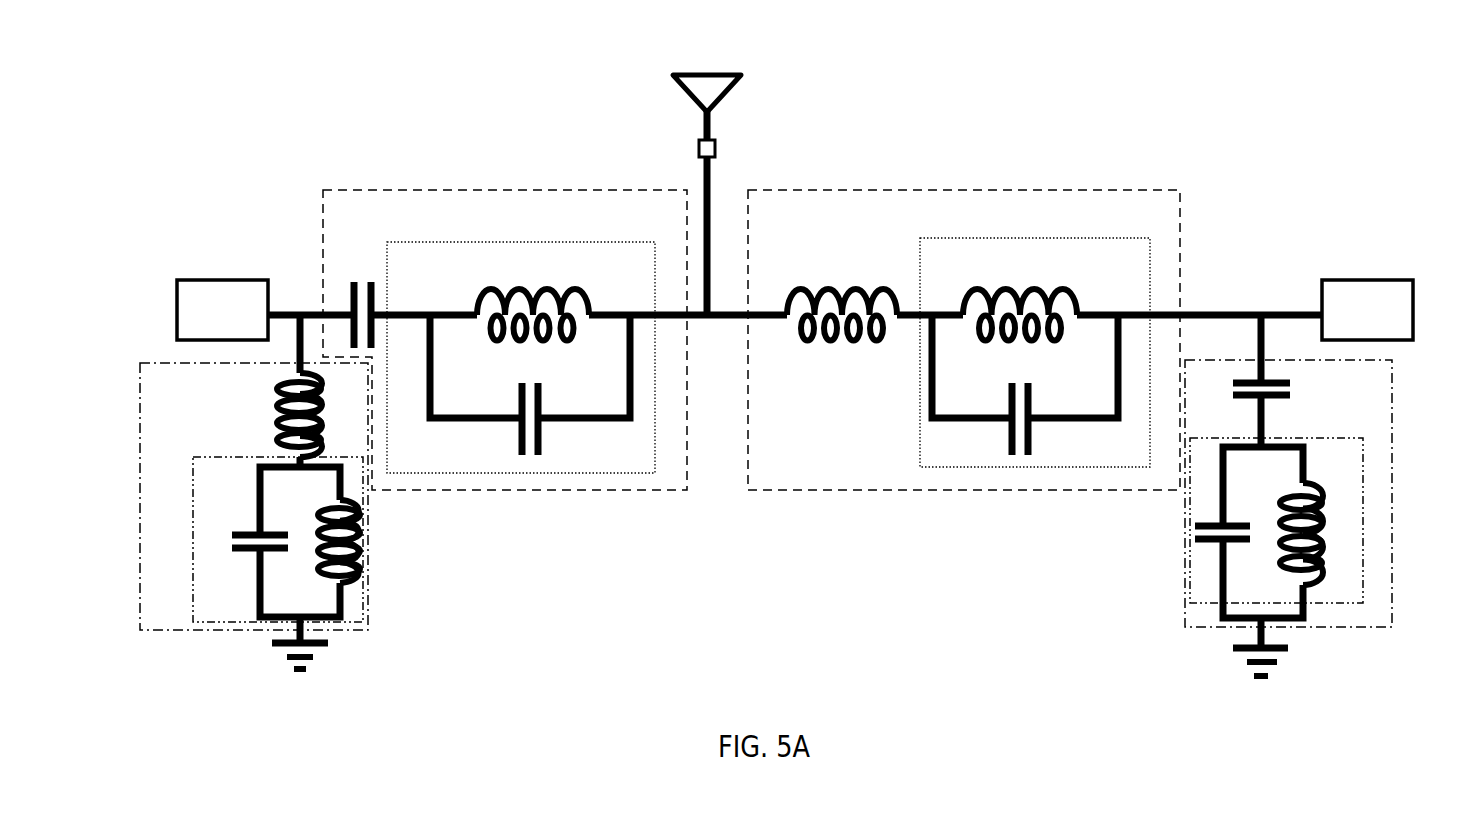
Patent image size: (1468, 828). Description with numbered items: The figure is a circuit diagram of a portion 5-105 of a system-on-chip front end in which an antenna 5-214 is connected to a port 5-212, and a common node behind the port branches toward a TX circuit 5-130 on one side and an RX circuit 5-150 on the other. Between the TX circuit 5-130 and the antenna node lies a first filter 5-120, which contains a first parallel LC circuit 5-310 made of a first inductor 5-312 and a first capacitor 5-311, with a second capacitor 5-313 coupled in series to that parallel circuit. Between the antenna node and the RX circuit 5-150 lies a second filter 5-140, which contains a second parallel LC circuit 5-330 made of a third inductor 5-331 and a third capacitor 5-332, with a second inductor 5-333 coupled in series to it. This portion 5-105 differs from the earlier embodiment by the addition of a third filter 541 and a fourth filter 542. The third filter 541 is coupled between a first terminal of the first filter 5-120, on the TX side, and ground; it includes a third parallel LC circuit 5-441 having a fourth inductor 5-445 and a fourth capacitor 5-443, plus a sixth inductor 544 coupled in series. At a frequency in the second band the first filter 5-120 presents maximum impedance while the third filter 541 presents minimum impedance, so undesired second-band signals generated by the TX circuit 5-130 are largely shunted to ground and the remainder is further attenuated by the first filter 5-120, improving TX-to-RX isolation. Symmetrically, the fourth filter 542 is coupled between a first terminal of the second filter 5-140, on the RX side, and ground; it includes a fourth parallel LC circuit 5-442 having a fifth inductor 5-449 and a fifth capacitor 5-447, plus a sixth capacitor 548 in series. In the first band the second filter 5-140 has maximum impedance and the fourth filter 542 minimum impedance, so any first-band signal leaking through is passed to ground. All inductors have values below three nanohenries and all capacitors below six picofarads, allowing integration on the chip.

The portion 5-105 is at (225, 63).
The antenna 5-214 is at (742, 76).
The port 5-212 is at (713, 141).
The first filter 5-120 is at (424, 190).
The second filter 5-140 is at (823, 190).
The TX circuit 5-130 is at (190, 279).
The RX circuit 5-150 is at (1369, 280).
The second capacitor 5-313 is at (366, 267).
The first parallel LC circuit 5-310 is at (470, 243).
The first inductor 5-312 is at (515, 343).
The first capacitor 5-311 is at (519, 438).
The second inductor 5-333 is at (825, 344).
The second parallel LC circuit 5-330 is at (975, 239).
The third inductor 5-331 is at (1028, 340).
The third capacitor 5-332 is at (1010, 440).
The third filter 541 is at (191, 632).
The third parallel LC circuit 5-441 is at (213, 457).
The sixth inductor 544 is at (319, 419).
The fourth capacitor 5-443 is at (252, 535).
The fourth inductor 5-445 is at (322, 568).
The fourth filter 542 is at (1184, 612).
The fourth parallel LC circuit 5-442 is at (1318, 438).
The sixth capacitor 548 is at (1243, 398).
The fifth capacitor 5-447 is at (1240, 522).
The fifth inductor 5-449 is at (1282, 565).